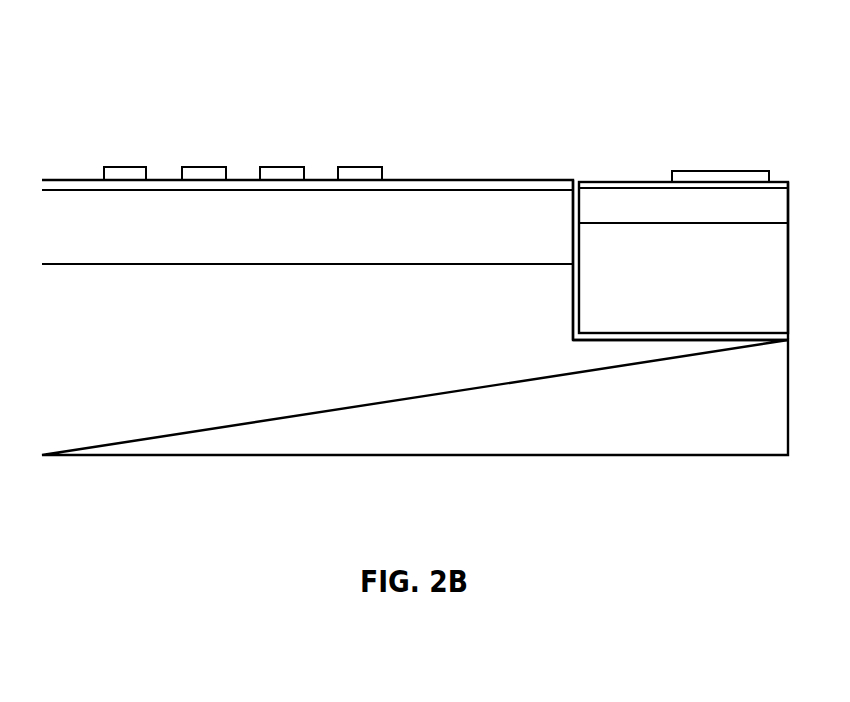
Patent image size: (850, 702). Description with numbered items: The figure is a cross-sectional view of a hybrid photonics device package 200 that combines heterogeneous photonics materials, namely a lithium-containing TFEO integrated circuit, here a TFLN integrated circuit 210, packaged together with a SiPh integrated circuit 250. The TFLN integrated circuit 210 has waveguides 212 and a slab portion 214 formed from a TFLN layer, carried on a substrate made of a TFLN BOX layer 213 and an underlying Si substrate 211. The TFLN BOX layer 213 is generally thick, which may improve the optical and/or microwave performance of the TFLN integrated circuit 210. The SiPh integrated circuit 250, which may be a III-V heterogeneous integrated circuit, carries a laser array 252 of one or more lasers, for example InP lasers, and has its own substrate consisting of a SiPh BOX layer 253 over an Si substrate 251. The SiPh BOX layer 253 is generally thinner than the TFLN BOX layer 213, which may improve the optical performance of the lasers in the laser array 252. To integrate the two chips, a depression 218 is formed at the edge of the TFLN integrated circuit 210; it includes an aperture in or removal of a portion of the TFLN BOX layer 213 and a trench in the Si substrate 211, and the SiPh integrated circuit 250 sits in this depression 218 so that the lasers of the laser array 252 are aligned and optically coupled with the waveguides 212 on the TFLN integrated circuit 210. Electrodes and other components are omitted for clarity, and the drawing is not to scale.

The hybrid photonics device package 200 is at (152, 64).
The TFLN integrated circuit 210 is at (121, 474).
The Si substrate 211 is at (173, 407).
The waveguides 212 is at (279, 152).
The TFLN BOX layer 213 is at (383, 238).
The slab portion 214 is at (535, 178).
The depression 218 is at (658, 358).
The SiPh integrated circuit 250 is at (714, 142).
The Si substrate 251 is at (703, 318).
The laser array 252 is at (690, 171).
The SiPh BOX layer 253 is at (783, 218).